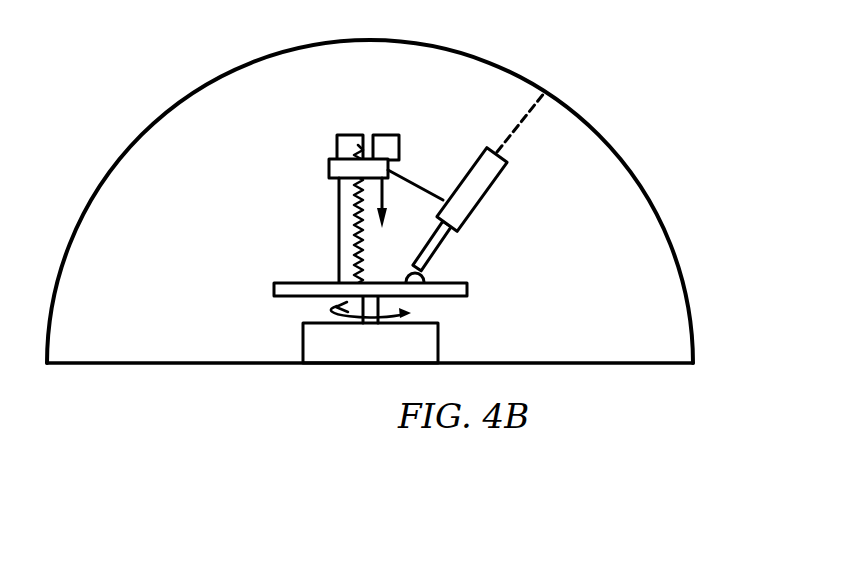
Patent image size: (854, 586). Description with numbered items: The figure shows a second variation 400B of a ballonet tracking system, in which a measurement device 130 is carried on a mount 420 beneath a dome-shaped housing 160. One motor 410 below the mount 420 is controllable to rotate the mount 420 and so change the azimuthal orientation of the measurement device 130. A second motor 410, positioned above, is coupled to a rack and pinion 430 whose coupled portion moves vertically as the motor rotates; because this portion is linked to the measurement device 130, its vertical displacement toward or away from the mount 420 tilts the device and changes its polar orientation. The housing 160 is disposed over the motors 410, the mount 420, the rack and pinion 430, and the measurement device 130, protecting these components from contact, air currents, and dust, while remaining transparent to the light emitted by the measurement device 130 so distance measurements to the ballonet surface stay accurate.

The second variation of ballonet tracking system 400B is at (541, 50).
The housing 160 is at (655, 205).
The motor 410 is at (391, 135).
The rack and pinion 430 is at (352, 190).
The measurement device 130 is at (496, 188).
The mount 420 is at (467, 290).